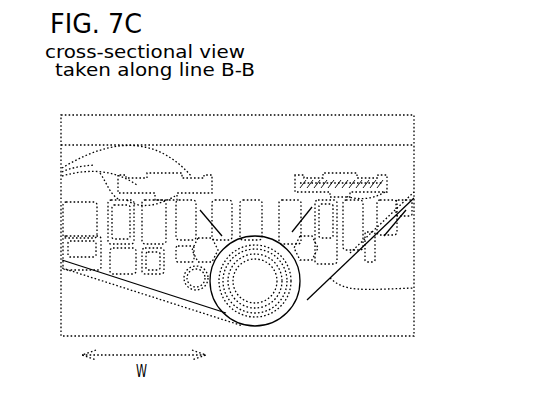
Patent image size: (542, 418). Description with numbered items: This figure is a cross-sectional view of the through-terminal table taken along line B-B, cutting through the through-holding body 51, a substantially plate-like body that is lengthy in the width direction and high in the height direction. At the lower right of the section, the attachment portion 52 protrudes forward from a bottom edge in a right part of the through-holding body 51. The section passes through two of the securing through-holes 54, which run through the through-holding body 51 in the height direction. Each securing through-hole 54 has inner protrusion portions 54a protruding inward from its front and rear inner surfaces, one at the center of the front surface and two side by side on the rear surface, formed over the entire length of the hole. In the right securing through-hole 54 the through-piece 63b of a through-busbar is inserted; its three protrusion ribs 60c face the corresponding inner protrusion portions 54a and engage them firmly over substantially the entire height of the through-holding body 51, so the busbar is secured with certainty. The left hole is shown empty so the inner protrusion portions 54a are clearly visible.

The through-holding body 51 is at (384, 83).
The attachment portion 52 is at (298, 306).
The securing through-hole 54 is at (229, 176).
The inner protrusion portion 54a is at (62, 171).
The protrusion rib 60c is at (370, 177).
The through-piece 63b is at (312, 176).